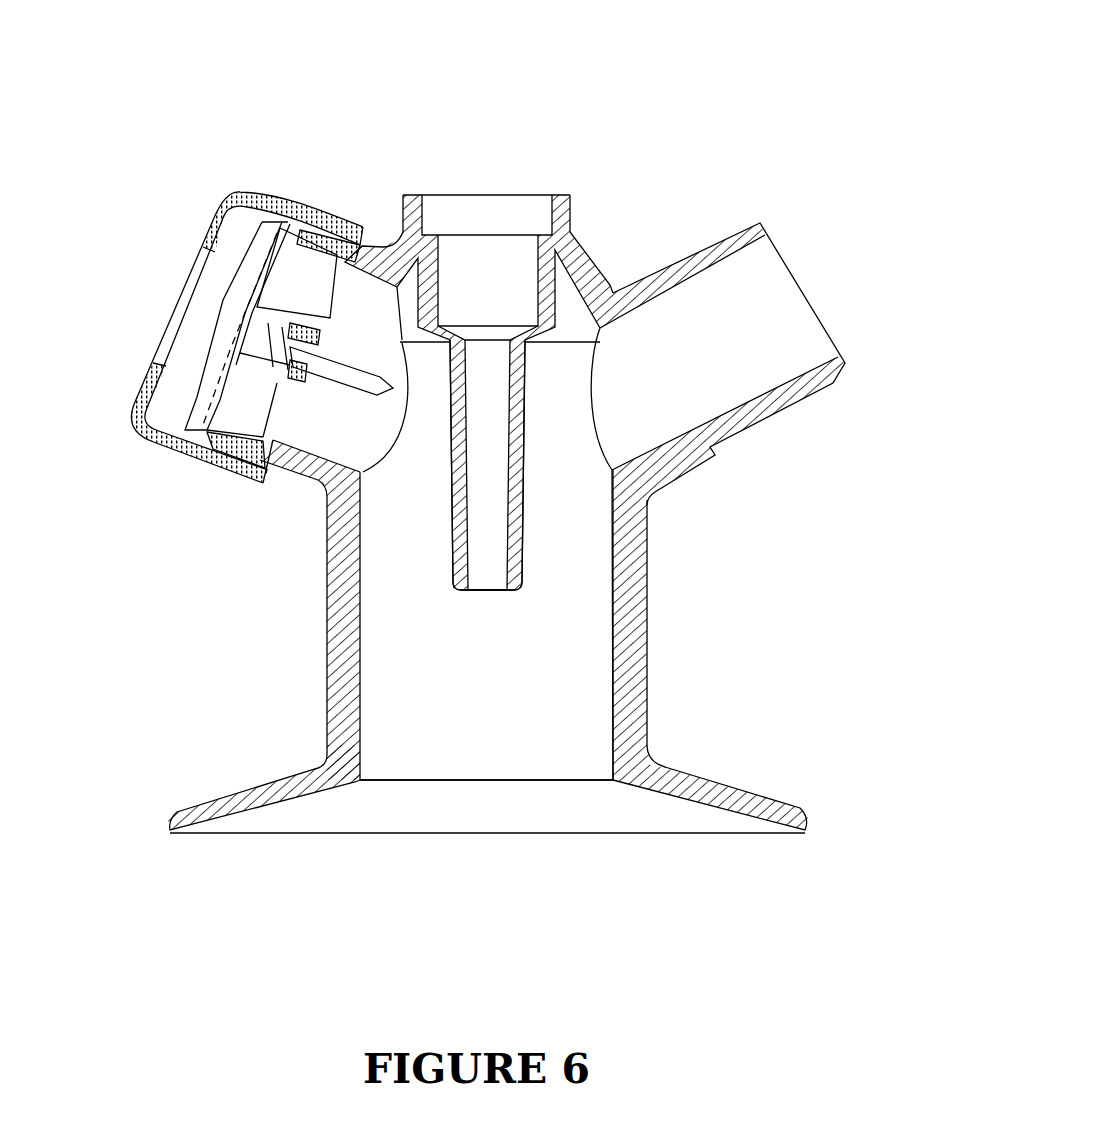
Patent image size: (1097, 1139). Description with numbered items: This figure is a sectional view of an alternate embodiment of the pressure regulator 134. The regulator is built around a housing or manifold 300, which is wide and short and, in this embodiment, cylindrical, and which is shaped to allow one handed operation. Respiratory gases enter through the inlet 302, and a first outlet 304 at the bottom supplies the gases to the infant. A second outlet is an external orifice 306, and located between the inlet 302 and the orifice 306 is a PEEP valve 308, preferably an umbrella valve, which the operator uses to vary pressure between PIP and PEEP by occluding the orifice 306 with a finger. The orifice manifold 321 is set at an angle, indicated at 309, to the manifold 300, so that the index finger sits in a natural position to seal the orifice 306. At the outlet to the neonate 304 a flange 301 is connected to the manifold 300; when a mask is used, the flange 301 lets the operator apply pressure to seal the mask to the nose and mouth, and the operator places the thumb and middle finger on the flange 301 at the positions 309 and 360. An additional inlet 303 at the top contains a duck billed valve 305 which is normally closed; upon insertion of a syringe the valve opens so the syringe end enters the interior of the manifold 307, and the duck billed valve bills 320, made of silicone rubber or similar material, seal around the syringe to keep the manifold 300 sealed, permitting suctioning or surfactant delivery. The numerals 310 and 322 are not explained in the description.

The pressure regulator 134 is at (780, 146).
The manifold 300 is at (638, 560).
The flange 301 is at (782, 836).
The inlet 302 is at (790, 344).
The inlet 303 is at (513, 255).
The first outlet 304 is at (408, 820).
The duck billed valve 305 is at (493, 326).
The orifice 306 is at (188, 282).
The interior of the manifold 307 is at (592, 637).
The PEEP valve 308 is at (323, 213).
The flange position 309 is at (773, 793).
The plate 310 is at (223, 445).
The duck billed valve bills 320 is at (497, 589).
The orifice manifold 321 is at (317, 483).
The cap lower wall 322 is at (160, 447).
The flange position 360 is at (238, 788).